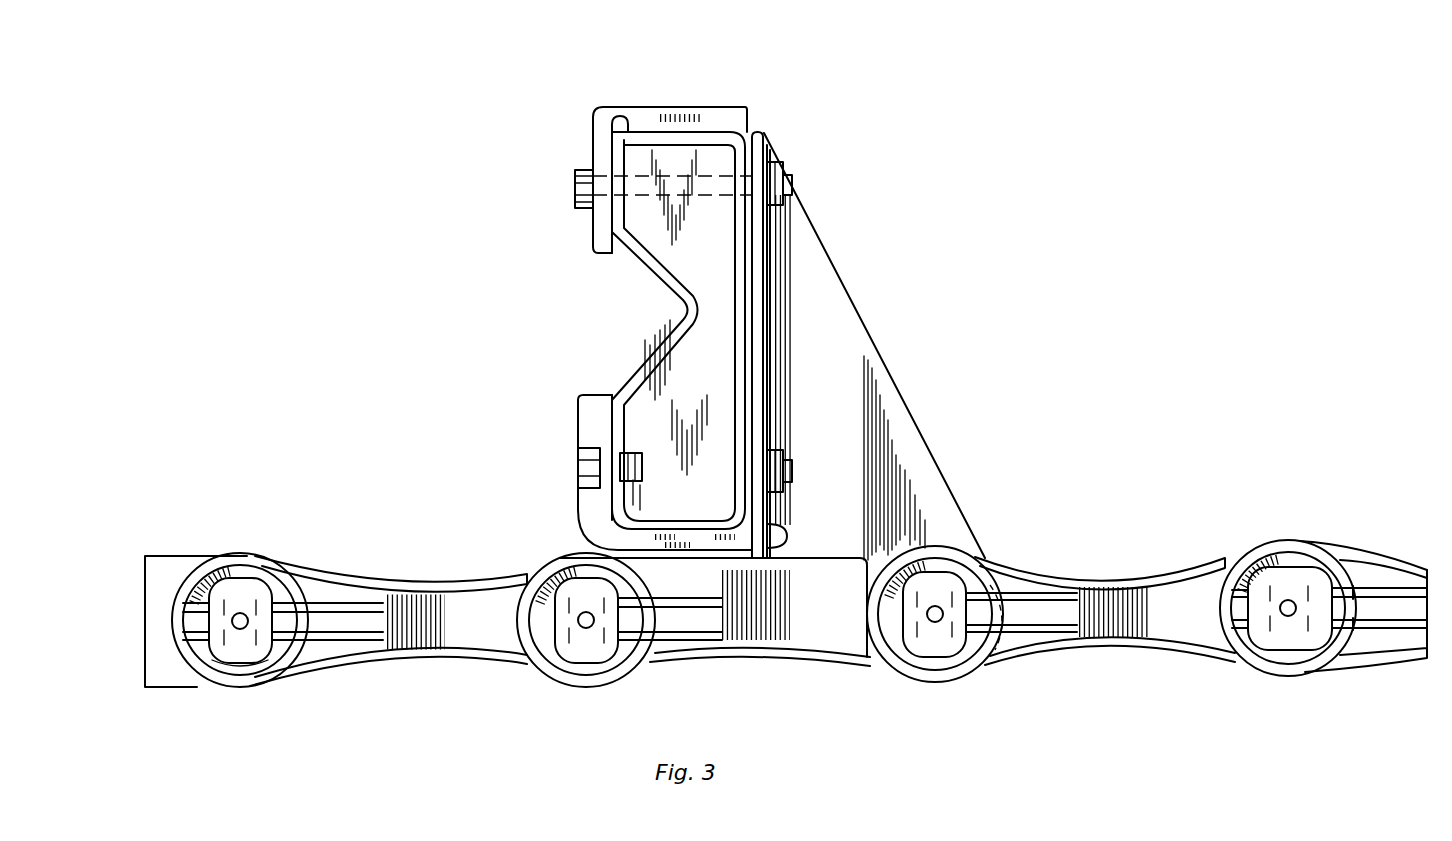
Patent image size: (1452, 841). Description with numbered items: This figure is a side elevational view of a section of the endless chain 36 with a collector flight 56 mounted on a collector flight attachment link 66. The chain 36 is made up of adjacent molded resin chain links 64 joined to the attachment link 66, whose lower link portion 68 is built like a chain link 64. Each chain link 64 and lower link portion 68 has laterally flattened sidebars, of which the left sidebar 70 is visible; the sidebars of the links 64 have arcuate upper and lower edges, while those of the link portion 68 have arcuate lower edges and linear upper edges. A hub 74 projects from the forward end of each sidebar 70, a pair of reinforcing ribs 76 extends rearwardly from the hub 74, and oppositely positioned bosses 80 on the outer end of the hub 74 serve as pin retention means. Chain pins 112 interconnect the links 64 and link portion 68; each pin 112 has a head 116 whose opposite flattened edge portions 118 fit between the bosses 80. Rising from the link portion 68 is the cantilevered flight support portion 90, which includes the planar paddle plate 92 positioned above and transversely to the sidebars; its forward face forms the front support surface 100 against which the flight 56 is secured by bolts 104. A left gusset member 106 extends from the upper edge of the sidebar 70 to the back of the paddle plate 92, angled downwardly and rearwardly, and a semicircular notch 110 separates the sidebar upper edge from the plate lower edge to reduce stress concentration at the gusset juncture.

The endless chain 36 is at (948, 258).
The collector flight 56 is at (673, 88).
The chain link 64 is at (415, 678).
The collector flight attachment link 66 is at (845, 695).
The lower link portion 68 is at (793, 657).
The left sidebar 70 is at (445, 583).
The hub 74 is at (208, 667).
The reinforcing rib 76 is at (320, 605).
The boss 80 is at (203, 603).
The flight support portion 90 is at (958, 474).
The paddle plate 92 is at (766, 132).
The front support surface 100 is at (742, 278).
The bolt 104 is at (793, 185).
The left gusset member 106 is at (876, 392).
The notch 110 is at (787, 538).
The chain pin 112 is at (237, 647).
The head 116 is at (250, 660).
The flattened edge portion 118 is at (210, 617).